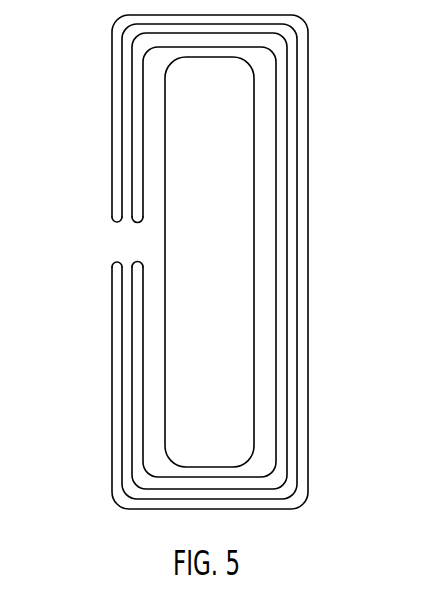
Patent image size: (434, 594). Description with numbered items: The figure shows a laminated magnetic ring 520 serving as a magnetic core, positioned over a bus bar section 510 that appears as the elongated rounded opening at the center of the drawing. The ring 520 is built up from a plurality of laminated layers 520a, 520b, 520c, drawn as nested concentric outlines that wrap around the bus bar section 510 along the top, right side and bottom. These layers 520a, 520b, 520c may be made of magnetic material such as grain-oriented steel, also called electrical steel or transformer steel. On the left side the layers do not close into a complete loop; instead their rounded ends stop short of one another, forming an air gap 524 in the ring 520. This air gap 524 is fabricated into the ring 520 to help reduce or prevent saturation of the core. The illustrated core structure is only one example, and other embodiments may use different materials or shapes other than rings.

The bus bar section 510 is at (167, 245).
The magnetic ring 520 is at (200, 286).
The laminated layer 520a is at (287, 223).
The laminated layer 520b is at (297, 277).
The laminated layer 520c is at (307, 298).
The air gap 524 is at (105, 225).